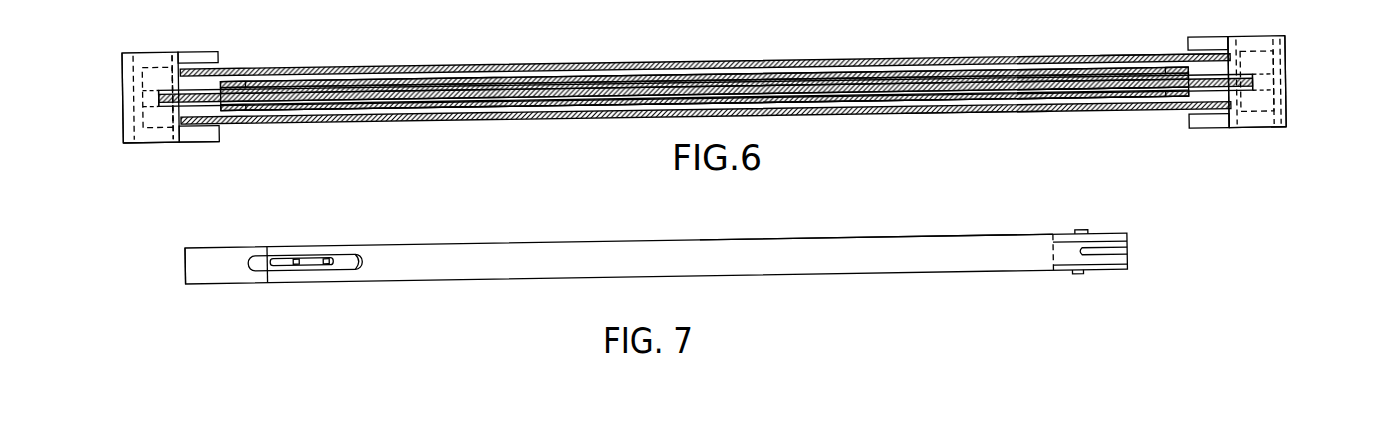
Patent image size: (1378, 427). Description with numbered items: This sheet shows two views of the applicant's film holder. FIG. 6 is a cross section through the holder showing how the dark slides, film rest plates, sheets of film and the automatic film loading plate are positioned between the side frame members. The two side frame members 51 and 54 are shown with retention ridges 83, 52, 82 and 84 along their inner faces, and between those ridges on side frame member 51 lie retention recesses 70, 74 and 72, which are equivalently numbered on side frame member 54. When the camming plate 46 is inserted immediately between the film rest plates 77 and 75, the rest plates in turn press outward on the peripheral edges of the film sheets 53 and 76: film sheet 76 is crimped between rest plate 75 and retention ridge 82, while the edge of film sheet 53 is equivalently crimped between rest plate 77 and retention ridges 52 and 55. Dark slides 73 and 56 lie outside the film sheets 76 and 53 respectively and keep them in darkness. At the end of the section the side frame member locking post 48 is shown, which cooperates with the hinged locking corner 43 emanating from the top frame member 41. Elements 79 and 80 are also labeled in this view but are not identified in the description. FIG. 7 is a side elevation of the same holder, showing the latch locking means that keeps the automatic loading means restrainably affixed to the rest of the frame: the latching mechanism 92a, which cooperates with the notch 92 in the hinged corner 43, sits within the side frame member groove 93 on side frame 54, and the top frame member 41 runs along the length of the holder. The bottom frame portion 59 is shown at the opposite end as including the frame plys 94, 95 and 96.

In FIG. 7, the top frame member 41 is at (225, 248).
In FIG. 6, the hinged locking corner 43 is at (122, 126).
In FIG. 7, the hinged locking corner 43 is at (230, 270).
In FIG. 6, the camming plate 46 is at (1108, 97).
In FIG. 6, the side frame member locking post 48 is at (128, 97).
In FIG. 6, the side frame member 51 is at (1287, 102).
In FIG. 6, the retention ridge 52 is at (1176, 65).
In FIG. 6, the film sheet 53 is at (868, 70).
In FIG. 6, the side frame member 54 is at (153, 145).
In FIG. 7, the side frame member 54 is at (880, 263).
In FIG. 6, the retention ridge 55 is at (242, 80).
In FIG. 6, the dark slide 56 is at (1130, 58).
In FIG. 7, the bottom frame portion 59 is at (1065, 252).
In FIG. 6, the retention recess 70 is at (178, 78).
In FIG. 6, the retention recess 72 is at (200, 142).
In FIG. 6, the dark slide 73 is at (1150, 108).
In FIG. 6, the retention recess 74 is at (157, 105).
In FIG. 6, the film rest plate 75 is at (978, 100).
In FIG. 6, the film sheet 76 is at (937, 104).
In FIG. 6, the film rest plate 77 is at (965, 78).
In FIG. 6, the inner tube end 79 is at (181, 105).
In FIG. 6, the block inner wall 80 is at (175, 142).
In FIG. 6, the retention ridge 82 is at (262, 114).
In FIG. 6, the retention ridge 83 is at (212, 60).
In FIG. 6, the retention ridge 84 is at (218, 134).
In FIG. 7, the notch 92 is at (258, 265).
In FIG. 7, the latching mechanism 92a is at (308, 268).
In FIG. 7, the side frame member groove 93 is at (355, 262).
In FIG. 7, the frame ply 94 is at (1082, 274).
In FIG. 7, the frame ply 95 is at (1082, 231).
In FIG. 7, the frame ply 96 is at (1110, 251).